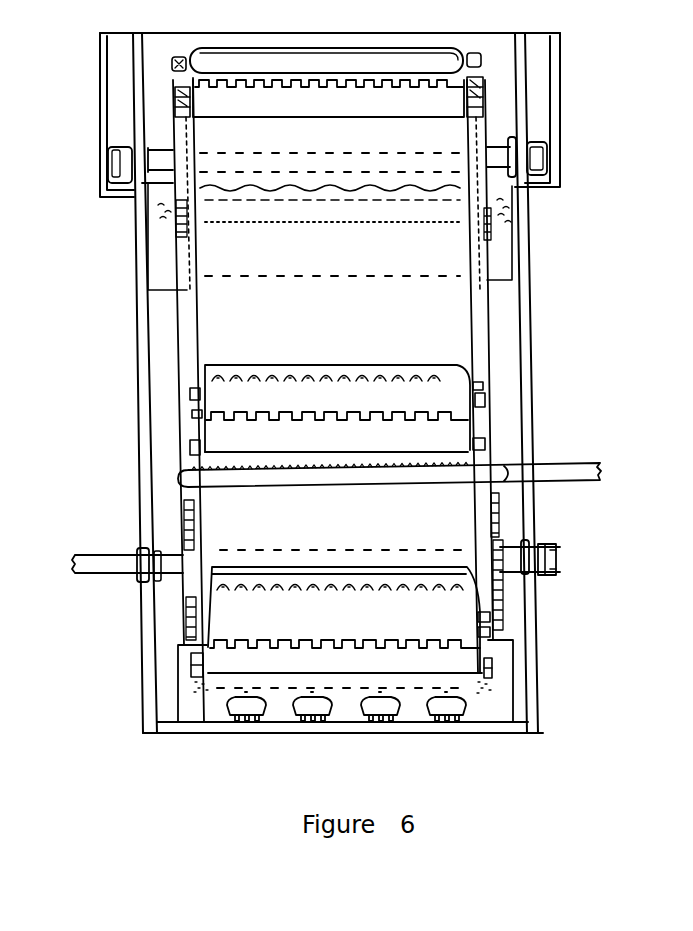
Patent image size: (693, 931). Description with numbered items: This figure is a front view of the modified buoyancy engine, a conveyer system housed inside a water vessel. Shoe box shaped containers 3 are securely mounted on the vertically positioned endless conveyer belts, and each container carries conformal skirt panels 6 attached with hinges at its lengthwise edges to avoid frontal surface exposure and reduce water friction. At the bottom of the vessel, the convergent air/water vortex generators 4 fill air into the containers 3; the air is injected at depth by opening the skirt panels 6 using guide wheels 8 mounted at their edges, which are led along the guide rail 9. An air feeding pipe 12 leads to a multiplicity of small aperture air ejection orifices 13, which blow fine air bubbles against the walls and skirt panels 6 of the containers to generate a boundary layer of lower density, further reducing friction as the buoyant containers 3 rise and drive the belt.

The guide rail 9 is at (168, 250).
The shoe box shaped container 3 is at (228, 392).
The conformal skirt panel 6 is at (223, 435).
The air feeding pipe 12 is at (558, 468).
The air ejection orifice 13 is at (493, 467).
The guide wheel 8 is at (490, 665).
The convergent air/water vortex generator 4 is at (387, 710).